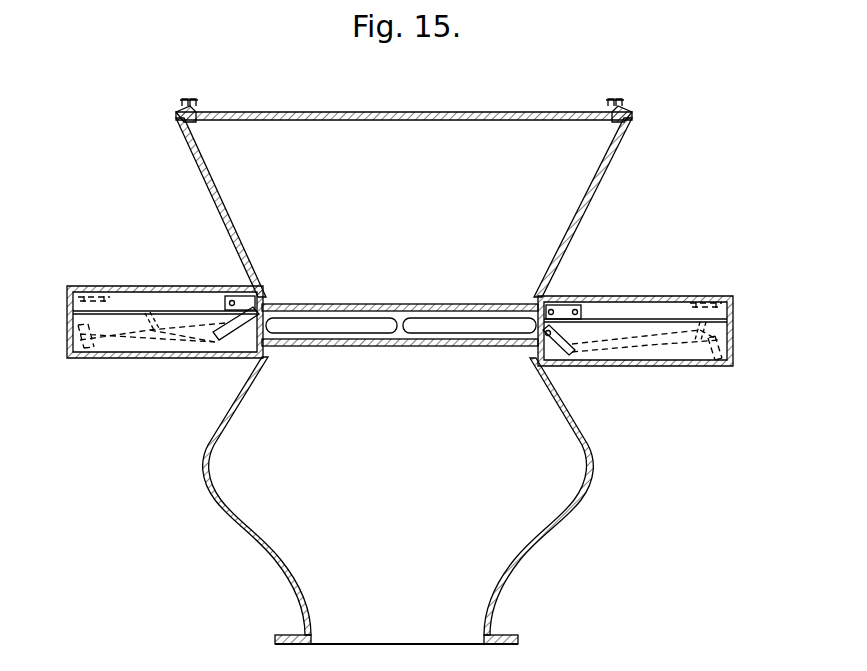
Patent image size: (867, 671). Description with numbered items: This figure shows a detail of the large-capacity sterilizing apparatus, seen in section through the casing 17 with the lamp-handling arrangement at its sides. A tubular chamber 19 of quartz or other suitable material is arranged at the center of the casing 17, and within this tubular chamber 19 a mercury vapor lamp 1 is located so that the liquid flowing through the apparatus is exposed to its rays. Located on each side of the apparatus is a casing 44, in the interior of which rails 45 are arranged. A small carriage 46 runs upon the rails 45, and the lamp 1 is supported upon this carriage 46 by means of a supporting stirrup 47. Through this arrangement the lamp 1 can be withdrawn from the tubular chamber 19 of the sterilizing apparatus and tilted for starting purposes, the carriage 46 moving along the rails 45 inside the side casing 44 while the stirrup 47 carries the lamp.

The casing 17 is at (223, 219).
The tubular chamber 19 is at (411, 305).
The mercury vapor lamp 1 is at (351, 329).
The casing 44 is at (214, 355).
The rails 45 is at (620, 322).
The carriage 46 is at (558, 306).
The supporting stirrup 47 is at (546, 351).